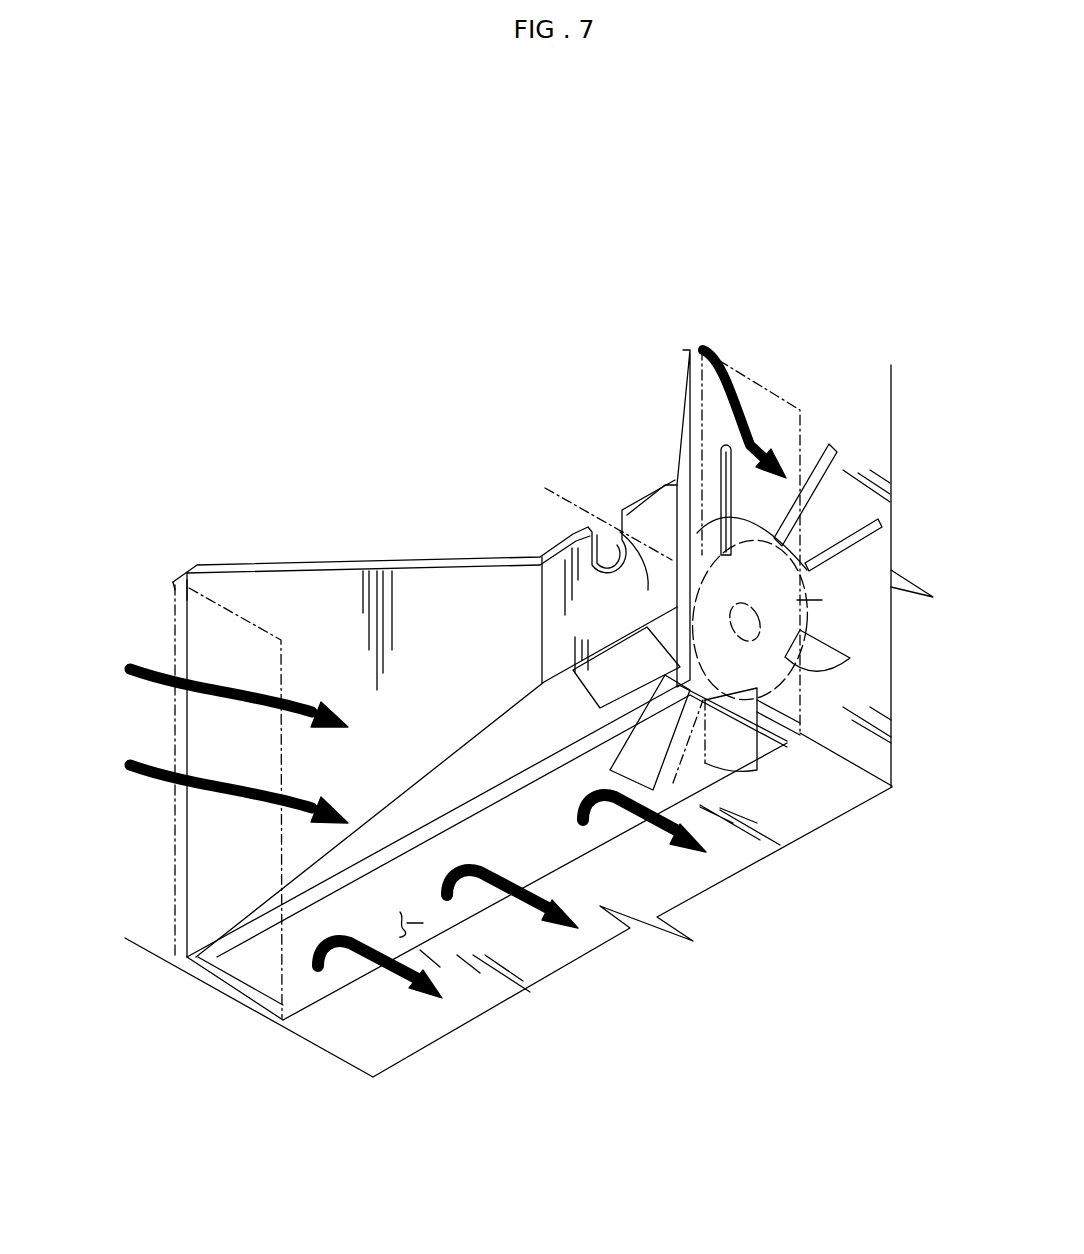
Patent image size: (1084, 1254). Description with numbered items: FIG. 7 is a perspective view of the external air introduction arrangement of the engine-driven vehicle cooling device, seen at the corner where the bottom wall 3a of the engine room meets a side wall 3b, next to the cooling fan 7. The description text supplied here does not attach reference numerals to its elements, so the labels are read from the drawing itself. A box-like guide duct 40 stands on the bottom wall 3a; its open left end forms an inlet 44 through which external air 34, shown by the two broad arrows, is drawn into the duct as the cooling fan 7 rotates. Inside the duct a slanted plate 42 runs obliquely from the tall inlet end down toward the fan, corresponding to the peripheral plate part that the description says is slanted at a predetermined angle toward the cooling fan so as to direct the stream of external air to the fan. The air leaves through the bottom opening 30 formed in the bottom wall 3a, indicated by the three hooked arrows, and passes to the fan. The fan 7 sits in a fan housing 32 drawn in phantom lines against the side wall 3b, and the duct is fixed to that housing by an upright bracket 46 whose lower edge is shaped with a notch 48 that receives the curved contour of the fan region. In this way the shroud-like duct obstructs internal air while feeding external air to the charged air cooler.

The bottom plate 3a is at (380, 1047).
The side wall 3b is at (867, 445).
The fan 7 is at (885, 622).
The outlet 30 is at (463, 927).
The fan housing 32 is at (773, 432).
The air flow 34 is at (230, 728).
The duct 40 is at (410, 535).
The inclined guide plate 42 is at (380, 830).
The inlet 44 is at (283, 580).
The bracket 46 is at (672, 455).
The fan receiving notch 48 is at (647, 518).